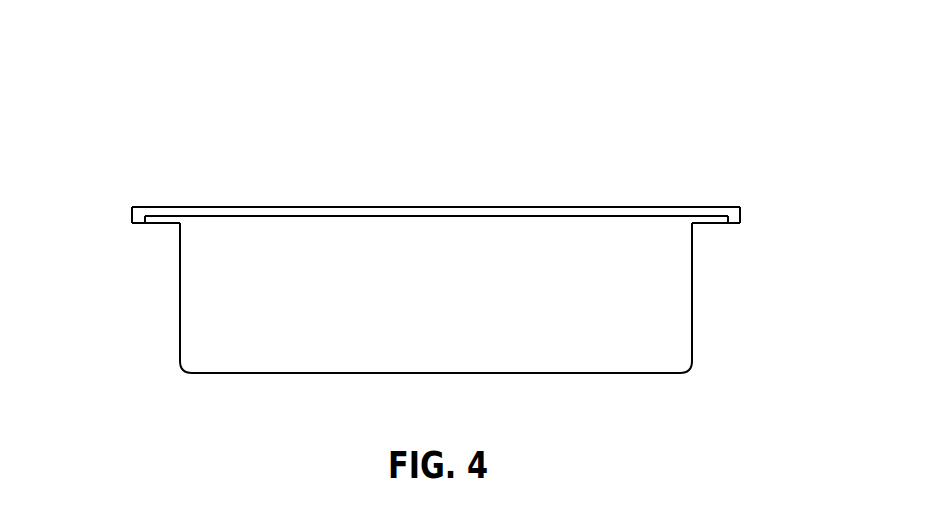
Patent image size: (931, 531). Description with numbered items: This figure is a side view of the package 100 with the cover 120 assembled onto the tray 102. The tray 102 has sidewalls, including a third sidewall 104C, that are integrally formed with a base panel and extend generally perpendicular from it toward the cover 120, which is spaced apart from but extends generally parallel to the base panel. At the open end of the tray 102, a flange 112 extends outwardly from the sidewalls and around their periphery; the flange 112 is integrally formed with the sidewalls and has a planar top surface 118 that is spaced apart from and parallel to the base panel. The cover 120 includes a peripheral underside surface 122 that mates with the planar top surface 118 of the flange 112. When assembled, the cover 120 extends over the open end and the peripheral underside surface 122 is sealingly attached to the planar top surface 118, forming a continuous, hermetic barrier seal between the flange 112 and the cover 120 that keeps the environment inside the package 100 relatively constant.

The package 100 is at (220, 110).
The tray 102 is at (195, 301).
The third sidewall 104C is at (480, 339).
The flange 112 is at (162, 224).
The planar top surface 118 is at (140, 222).
The cover 120 is at (412, 208).
The peripheral underside surface 122 is at (165, 218).